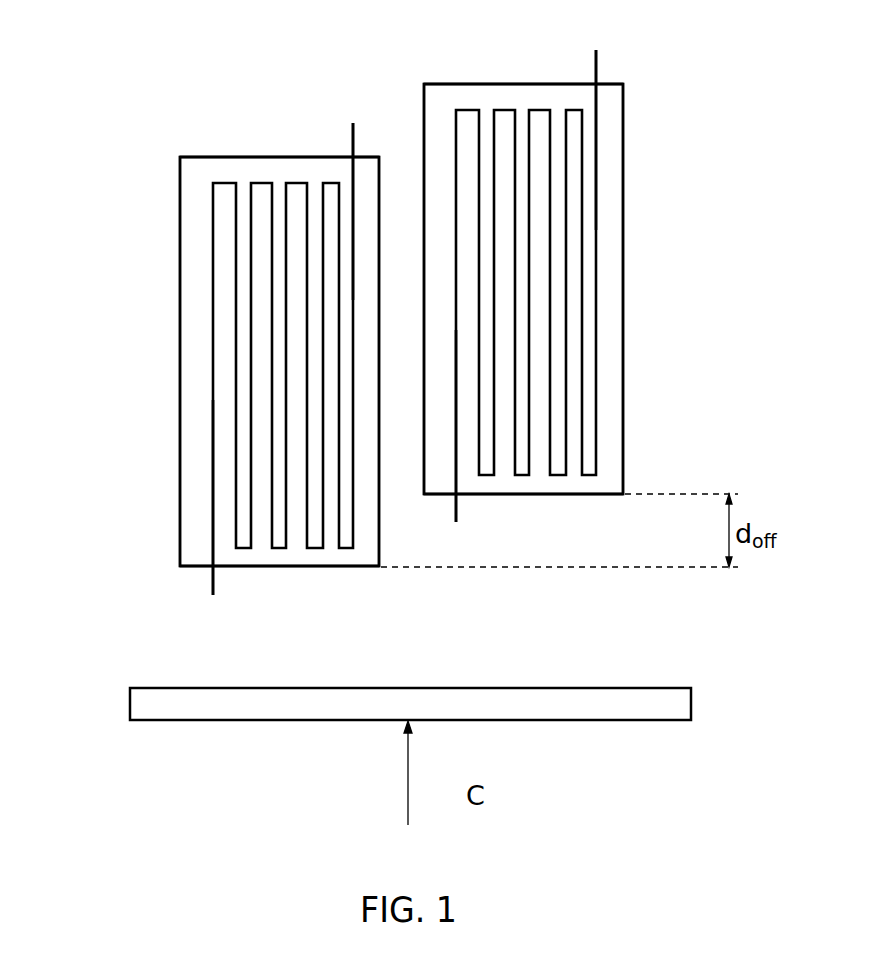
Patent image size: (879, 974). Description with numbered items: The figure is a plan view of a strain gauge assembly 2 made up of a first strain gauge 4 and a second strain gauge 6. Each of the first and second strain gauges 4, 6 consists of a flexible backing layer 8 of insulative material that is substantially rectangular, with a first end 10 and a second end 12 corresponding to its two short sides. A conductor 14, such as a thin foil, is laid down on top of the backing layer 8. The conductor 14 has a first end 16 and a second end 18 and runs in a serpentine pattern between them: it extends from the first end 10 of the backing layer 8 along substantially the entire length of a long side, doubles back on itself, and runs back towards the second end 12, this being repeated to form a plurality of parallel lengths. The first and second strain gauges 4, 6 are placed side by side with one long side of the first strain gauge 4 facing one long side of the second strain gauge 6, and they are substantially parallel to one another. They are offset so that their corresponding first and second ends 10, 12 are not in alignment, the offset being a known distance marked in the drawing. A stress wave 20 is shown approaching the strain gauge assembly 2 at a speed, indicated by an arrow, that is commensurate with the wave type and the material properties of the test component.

The strain gauge assembly 2 is at (126, 146).
The first strain gauge 4 is at (200, 362).
The second strain gauge 6 is at (603, 310).
The backing layer 8 is at (205, 292).
The first end 10 is at (282, 568).
The second end 12 is at (270, 156).
The conductor 14 is at (212, 436).
The first end 16 is at (210, 580).
The second end 18 is at (353, 125).
The stress wave 20 is at (165, 722).